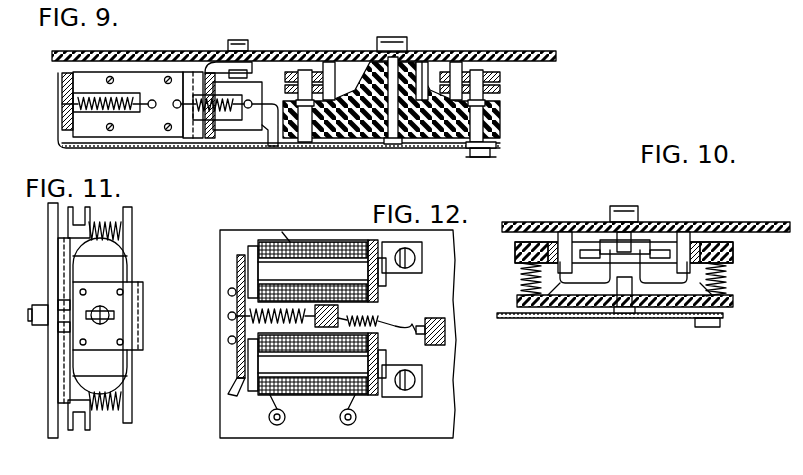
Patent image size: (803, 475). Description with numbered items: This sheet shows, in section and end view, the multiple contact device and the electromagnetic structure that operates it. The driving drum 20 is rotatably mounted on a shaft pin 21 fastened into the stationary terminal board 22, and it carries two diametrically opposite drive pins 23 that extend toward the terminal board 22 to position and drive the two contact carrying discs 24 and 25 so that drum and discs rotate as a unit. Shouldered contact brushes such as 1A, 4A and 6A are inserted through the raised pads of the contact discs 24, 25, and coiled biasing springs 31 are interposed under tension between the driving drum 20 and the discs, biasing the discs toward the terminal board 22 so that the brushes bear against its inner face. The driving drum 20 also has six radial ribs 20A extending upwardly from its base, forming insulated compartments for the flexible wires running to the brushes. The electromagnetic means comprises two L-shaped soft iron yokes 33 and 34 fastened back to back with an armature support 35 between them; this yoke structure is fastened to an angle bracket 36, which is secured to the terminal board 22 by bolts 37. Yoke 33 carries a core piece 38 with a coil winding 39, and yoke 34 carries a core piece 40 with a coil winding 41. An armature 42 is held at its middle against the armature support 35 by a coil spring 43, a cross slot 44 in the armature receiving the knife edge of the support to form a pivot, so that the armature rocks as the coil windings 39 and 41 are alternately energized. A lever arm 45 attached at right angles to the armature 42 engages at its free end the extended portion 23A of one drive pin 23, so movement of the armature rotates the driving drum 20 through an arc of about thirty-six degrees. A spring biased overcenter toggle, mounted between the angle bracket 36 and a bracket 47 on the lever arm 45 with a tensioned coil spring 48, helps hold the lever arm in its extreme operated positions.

In FIG. 10, the contact brush 1A is at (685, 222).
In FIG. 9, the contact brush 4A is at (328, 62).
In FIG. 10, the contact brush 4A is at (558, 222).
In FIG. 9, the contact brush 6A is at (466, 56).
In FIG. 9, the driving drum 20 is at (427, 132).
In FIG. 10, the driving drum 20 is at (667, 307).
In FIG. 11, the driving drum 20 is at (128, 420).
In FIG. 9, the radial ribs 20A is at (418, 97).
In FIG. 9, the shaft pin 21 is at (393, 135).
In FIG. 10, the shaft pin 21 is at (625, 206).
In FIG. 11, the shaft pin 21 is at (34, 305).
In FIG. 9, the terminal board 22 is at (528, 53).
In FIG. 10, the terminal board 22 is at (748, 222).
In FIG. 11, the terminal board 22 is at (50, 372).
In FIG. 12, the terminal board 22 is at (455, 405).
In FIG. 9, the drive pins 23 is at (488, 98).
In FIG. 9, the extended portion 23A is at (478, 158).
In FIG. 9, the contact carrying disc 24 is at (500, 89).
In FIG. 10, the contact carrying disc 24 is at (733, 251).
In FIG. 11, the contact carrying disc 24 is at (88, 420).
In FIG. 9, the contact carrying disc 25 is at (500, 77).
In FIG. 10, the contact carrying disc 25 is at (515, 251).
In FIG. 11, the contact carrying disc 25 is at (72, 426).
In FIG. 10, the coiled biasing springs 31 is at (521, 278).
In FIG. 12, the yoke 33 is at (368, 242).
In FIG. 9, the yoke 34 is at (194, 138).
In FIG. 12, the yoke 34 is at (372, 395).
In FIG. 9, the armature support 35 is at (147, 128).
In FIG. 12, the armature support 35 is at (340, 316).
In FIG. 9, the angle bracket 36 is at (222, 63).
In FIG. 12, the angle bracket 36 is at (378, 296).
In FIG. 9, the bolts 37 is at (247, 41).
In FIG. 12, the bolts 37 is at (415, 258).
In FIG. 12, the core piece 38 is at (318, 268).
In FIG. 11, the coil winding 39 is at (105, 252).
In FIG. 12, the coil winding 39 is at (293, 242).
In FIG. 12, the core piece 40 is at (338, 368).
In FIG. 11, the coil winding 41 is at (110, 385).
In FIG. 12, the coil winding 41 is at (298, 395).
In FIG. 9, the armature 42 is at (62, 86).
In FIG. 11, the armature 42 is at (112, 370).
In FIG. 12, the armature 42 is at (237, 270).
In FIG. 9, the coil spring 43 is at (104, 110).
In FIG. 12, the coil spring 43 is at (236, 320).
In FIG. 12, the cross slot 44 is at (236, 312).
In FIG. 9, the lever arm 45 is at (333, 147).
In FIG. 10, the lever arm 45 is at (560, 318).
In FIG. 11, the lever arm 45 is at (133, 287).
In FIG. 9, the bracket 47 is at (268, 132).
In FIG. 12, the bracket 47 is at (446, 335).
In FIG. 9, the tensioned coil spring 48 is at (222, 110).
In FIG. 12, the tensioned coil spring 48 is at (378, 325).